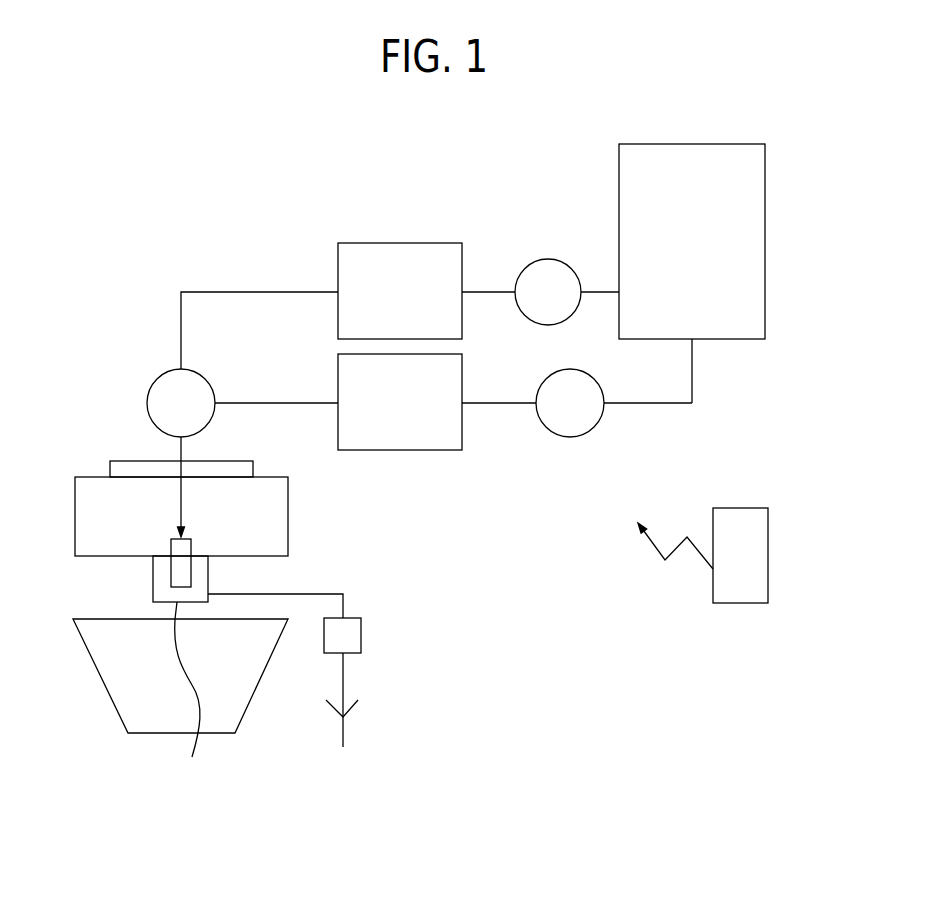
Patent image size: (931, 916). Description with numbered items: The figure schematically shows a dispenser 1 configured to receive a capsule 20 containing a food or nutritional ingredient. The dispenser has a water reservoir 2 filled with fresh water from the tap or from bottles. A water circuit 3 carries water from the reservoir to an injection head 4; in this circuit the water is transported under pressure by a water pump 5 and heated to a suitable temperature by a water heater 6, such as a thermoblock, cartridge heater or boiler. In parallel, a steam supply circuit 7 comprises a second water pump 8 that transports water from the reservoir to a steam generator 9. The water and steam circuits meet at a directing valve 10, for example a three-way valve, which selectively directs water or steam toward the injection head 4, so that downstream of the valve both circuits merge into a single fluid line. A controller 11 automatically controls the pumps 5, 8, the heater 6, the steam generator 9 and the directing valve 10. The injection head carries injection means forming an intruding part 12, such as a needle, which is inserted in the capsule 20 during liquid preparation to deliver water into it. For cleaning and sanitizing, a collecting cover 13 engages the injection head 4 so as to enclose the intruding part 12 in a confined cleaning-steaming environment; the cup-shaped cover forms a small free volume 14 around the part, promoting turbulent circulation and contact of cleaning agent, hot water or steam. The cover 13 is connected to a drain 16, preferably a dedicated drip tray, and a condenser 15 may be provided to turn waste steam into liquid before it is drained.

The dispenser 1 is at (237, 233).
The water reservoir 2 is at (765, 230).
The water circuit 3 is at (692, 403).
The injection head 4 is at (292, 528).
The water pump 5 is at (575, 437).
The water heater 6 is at (430, 450).
The steam supply circuit 7 is at (488, 292).
The second water pump 8 is at (547, 259).
The steam generator 9 is at (410, 243).
The directing valve 10 is at (150, 395).
The controller 11 is at (768, 557).
The intruding part 12 is at (180, 568).
The collecting cover 13 is at (189, 691).
The free volume 14 is at (163, 575).
The condenser 15 is at (361, 633).
The drain 16 is at (343, 733).
The capsule 20 is at (96, 685).